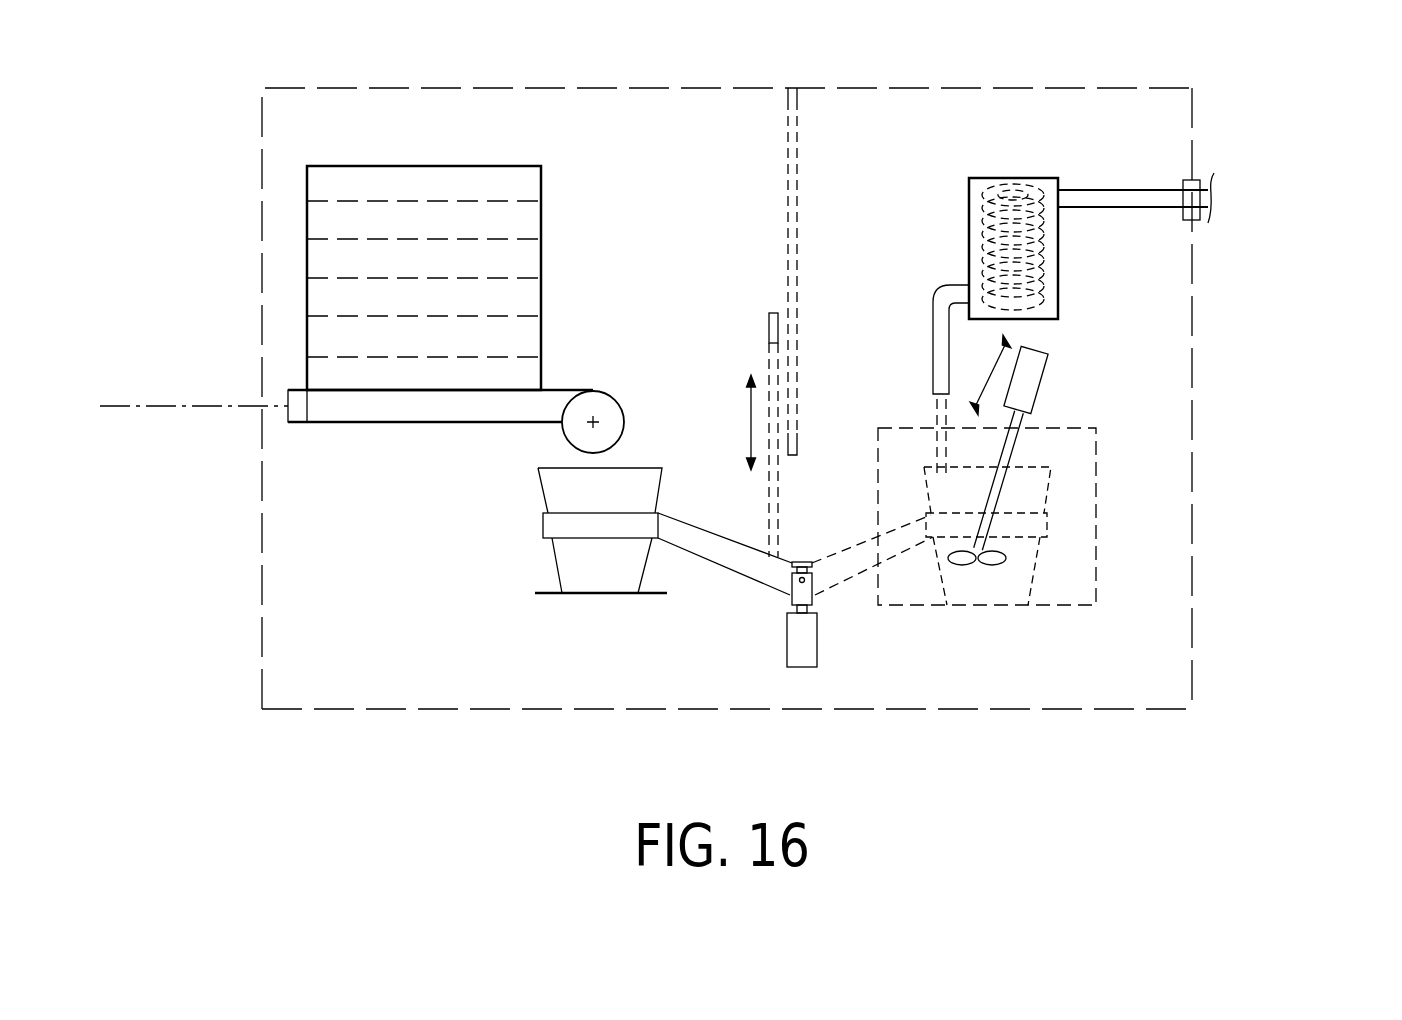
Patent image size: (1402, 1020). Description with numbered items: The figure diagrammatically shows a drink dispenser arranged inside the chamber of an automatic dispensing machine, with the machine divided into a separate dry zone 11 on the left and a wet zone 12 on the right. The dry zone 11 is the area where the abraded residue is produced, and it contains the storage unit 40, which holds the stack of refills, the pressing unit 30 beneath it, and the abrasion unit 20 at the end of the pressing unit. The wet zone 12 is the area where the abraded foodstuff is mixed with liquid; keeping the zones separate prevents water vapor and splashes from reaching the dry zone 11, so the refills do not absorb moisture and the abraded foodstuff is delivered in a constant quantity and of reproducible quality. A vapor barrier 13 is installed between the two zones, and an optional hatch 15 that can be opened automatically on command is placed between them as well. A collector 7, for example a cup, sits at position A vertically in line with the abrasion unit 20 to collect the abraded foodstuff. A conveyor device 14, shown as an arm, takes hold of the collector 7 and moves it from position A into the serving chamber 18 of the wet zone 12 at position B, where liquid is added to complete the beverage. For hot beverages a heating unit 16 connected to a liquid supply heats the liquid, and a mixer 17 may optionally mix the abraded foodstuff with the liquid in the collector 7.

The collector 7 is at (547, 565).
The dry zone 11 is at (245, 178).
The wet zone 12 is at (1205, 330).
The vapor barrier 13 is at (798, 410).
The conveyor device 14 is at (722, 578).
The hatch 15 is at (768, 338).
The heating unit 16 is at (1058, 255).
The mixer 17 is at (1046, 376).
The serving chamber 18 is at (1096, 467).
The abrasion unit 20 is at (550, 437).
The pressing unit 30 is at (334, 432).
The storage unit 40 is at (307, 222).